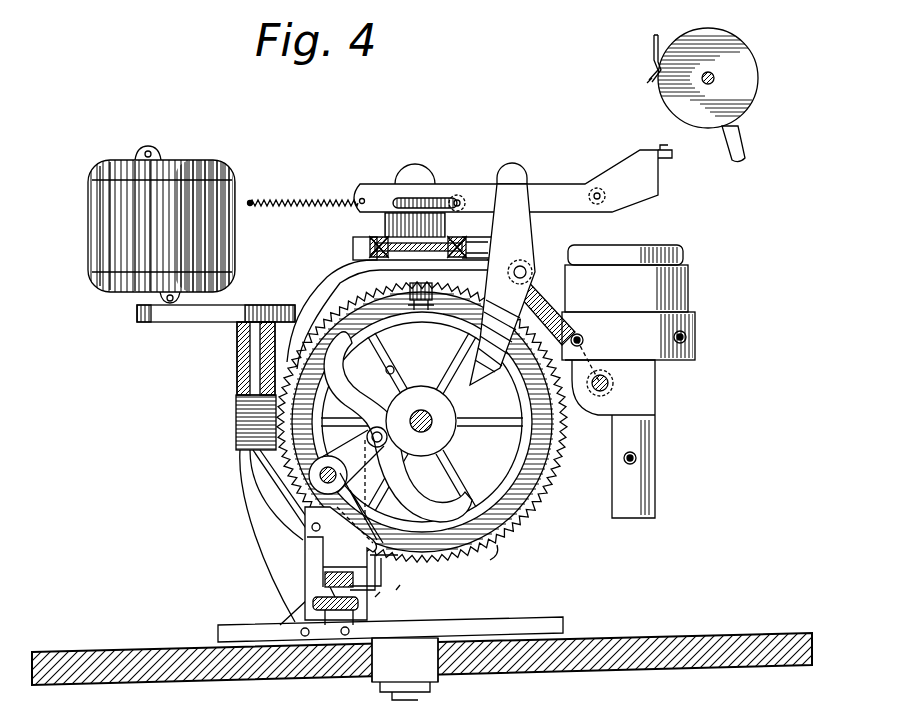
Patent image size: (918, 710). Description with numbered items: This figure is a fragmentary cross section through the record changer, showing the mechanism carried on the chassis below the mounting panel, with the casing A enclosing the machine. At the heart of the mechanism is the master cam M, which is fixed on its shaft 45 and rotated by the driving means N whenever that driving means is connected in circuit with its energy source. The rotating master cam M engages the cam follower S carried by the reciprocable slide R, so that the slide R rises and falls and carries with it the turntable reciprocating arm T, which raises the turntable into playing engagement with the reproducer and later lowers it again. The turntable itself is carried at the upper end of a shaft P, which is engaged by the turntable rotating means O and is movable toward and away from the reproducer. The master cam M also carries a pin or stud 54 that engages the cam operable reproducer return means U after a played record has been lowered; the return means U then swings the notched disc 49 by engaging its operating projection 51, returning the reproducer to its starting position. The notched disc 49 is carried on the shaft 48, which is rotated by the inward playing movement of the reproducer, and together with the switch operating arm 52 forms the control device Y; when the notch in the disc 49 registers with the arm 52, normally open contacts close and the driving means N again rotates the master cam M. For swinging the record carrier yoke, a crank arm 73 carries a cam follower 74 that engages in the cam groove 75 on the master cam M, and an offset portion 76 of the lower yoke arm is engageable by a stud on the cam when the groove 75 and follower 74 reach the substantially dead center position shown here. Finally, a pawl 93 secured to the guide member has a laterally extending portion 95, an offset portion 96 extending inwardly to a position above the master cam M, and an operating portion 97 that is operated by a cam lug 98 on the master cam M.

The casing A is at (745, 635).
The driving means N is at (222, 335).
The reciprocable slide R is at (362, 262).
The cam follower S is at (422, 302).
The reproducer return means U is at (583, 183).
The turntable reciprocating arm T is at (553, 310).
The master cam M is at (535, 515).
The cam groove 75 is at (497, 552).
The shaft 45 is at (430, 418).
The cam lug 98 is at (420, 520).
The pin or stud 54 is at (405, 361).
The cam follower 74 is at (388, 440).
The crank arm 73 is at (335, 448).
The offset portion 76 is at (310, 560).
The laterally extending portion 95 is at (312, 600).
The operating portion 97 is at (396, 560).
The pawl 93 is at (395, 598).
The offset portion 96 is at (405, 590).
The turntable rotating means O is at (695, 352).
The shaft P is at (598, 395).
The notched disc 49 is at (758, 70).
The shaft 48 is at (712, 72).
The operating projection 51 is at (740, 148).
The switch operating arm 52 is at (650, 40).
The control device Y is at (642, 80).